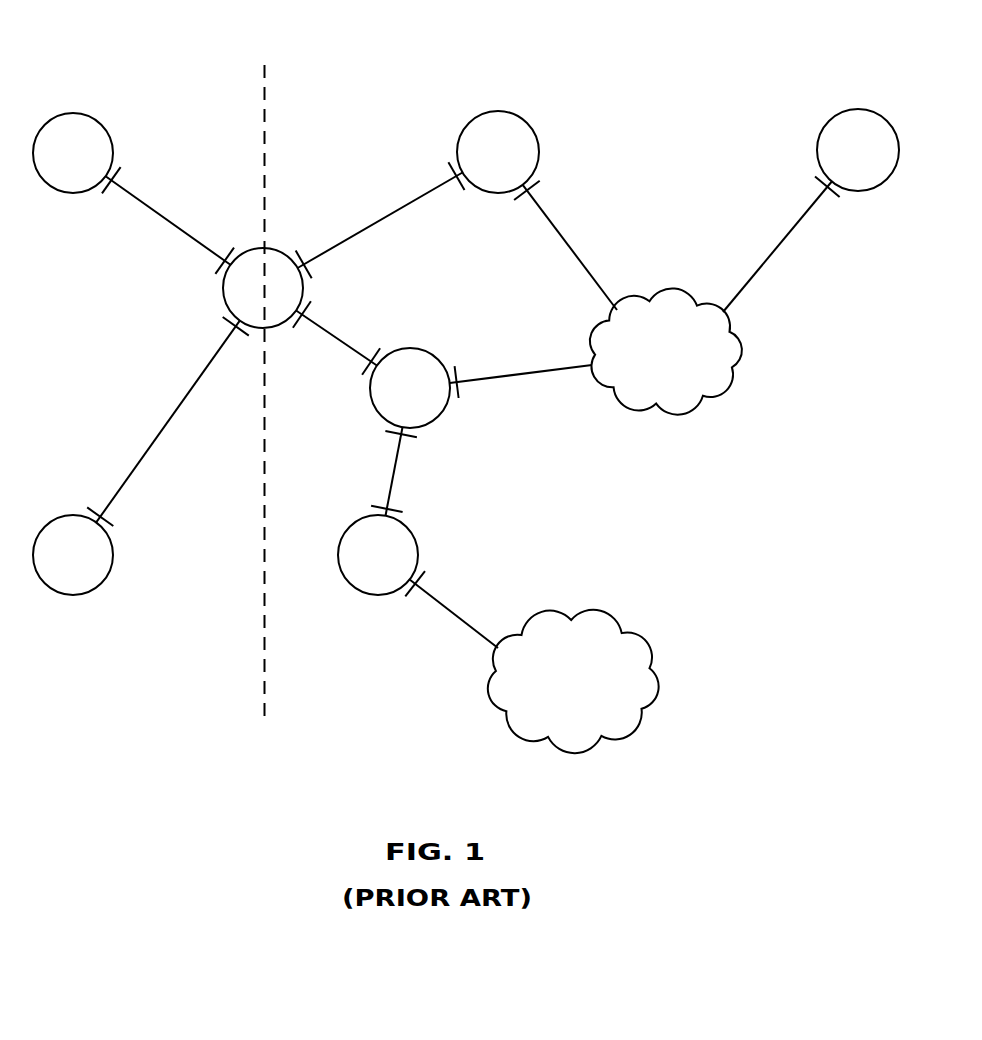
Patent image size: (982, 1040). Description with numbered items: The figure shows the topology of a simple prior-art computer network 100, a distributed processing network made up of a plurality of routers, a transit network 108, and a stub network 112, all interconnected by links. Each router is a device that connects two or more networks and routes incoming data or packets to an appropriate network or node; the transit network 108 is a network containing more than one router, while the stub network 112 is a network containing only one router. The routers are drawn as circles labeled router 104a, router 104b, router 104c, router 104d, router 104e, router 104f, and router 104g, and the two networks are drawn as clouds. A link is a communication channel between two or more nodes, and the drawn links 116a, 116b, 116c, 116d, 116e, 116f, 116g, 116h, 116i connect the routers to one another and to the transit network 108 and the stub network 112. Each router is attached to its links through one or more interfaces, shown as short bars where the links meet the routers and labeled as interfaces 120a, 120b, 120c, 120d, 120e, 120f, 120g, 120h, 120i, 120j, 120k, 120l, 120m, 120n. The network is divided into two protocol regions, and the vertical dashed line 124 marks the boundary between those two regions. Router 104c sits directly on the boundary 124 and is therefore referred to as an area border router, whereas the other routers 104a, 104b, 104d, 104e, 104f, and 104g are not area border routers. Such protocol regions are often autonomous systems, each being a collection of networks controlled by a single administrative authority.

The network 100 is at (174, 67).
The router 104a is at (45, 167).
The router 104b is at (45, 569).
The router 104c is at (235, 302).
The router 104d is at (469, 166).
The router 104e is at (381, 402).
The router 104f is at (351, 569).
The router 104g is at (829, 164).
The transit network 108 is at (648, 366).
The stub network 112 is at (555, 694).
The link 116a is at (172, 223).
The link 116b is at (160, 433).
The link 116c is at (405, 206).
The link 116d is at (333, 335).
The link 116e is at (396, 468).
The link 116f is at (455, 614).
The link 116g is at (543, 371).
The link 116h is at (574, 252).
The link 116i is at (775, 250).
The interface 120a is at (104, 197).
The interface 120b is at (116, 527).
The interface 120c is at (215, 273).
The interface 120d is at (222, 318).
The interface 120e is at (300, 250).
The interface 120f is at (298, 330).
The interface 120g is at (463, 197).
The interface 120h is at (360, 378).
The interface 120i is at (383, 437).
The interface 120j is at (374, 505).
The interface 120k is at (407, 600).
The interface 120l is at (467, 398).
The interface 120m is at (545, 182).
The interface 120n is at (812, 180).
The dashed line 124 is at (263, 654).